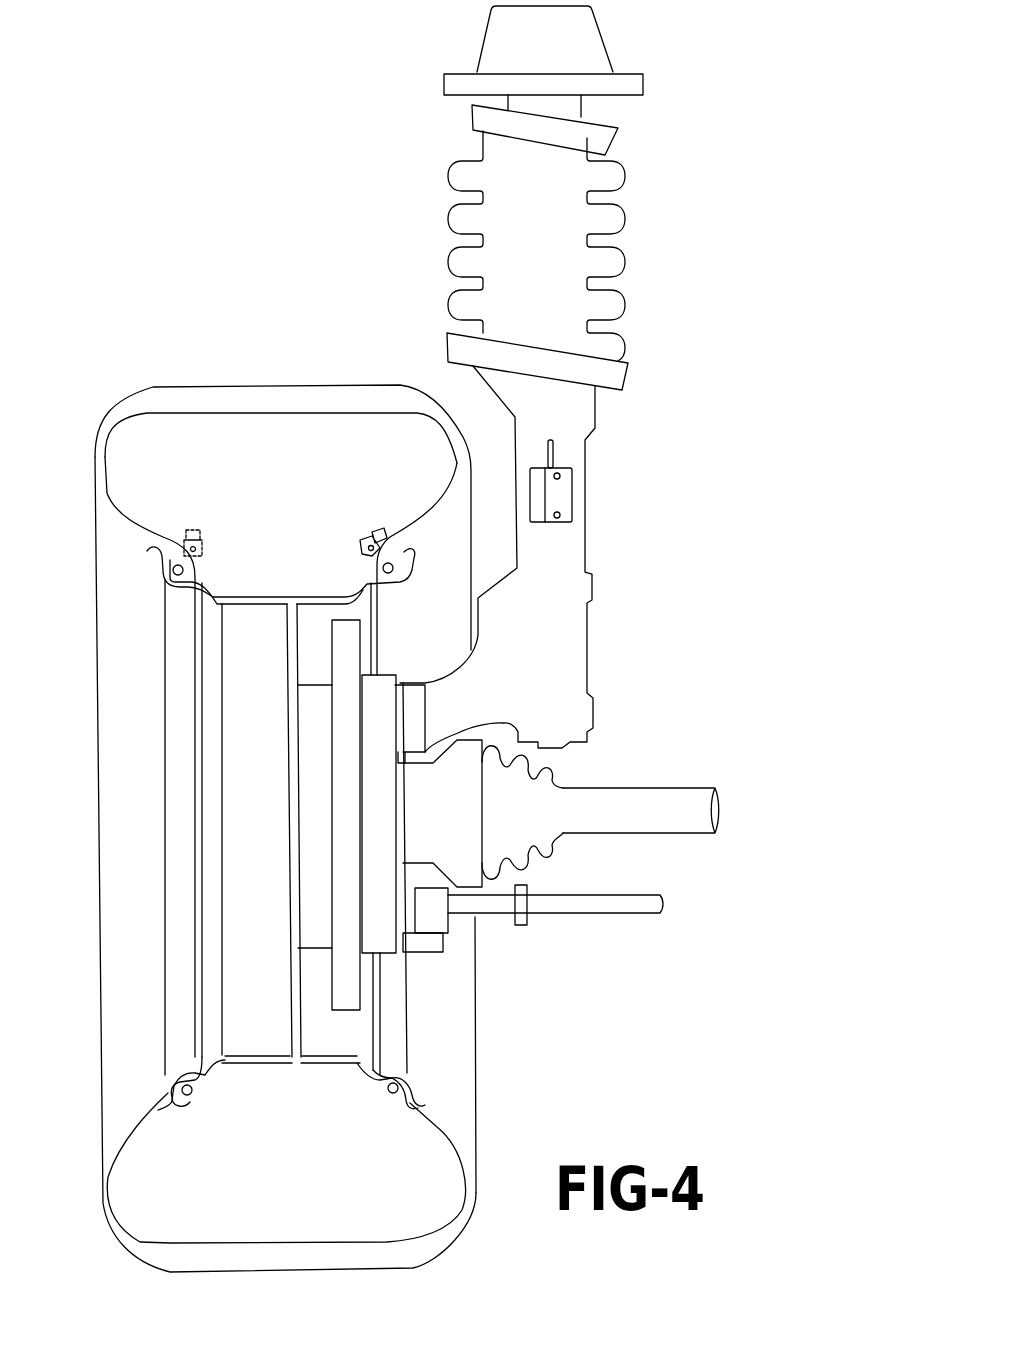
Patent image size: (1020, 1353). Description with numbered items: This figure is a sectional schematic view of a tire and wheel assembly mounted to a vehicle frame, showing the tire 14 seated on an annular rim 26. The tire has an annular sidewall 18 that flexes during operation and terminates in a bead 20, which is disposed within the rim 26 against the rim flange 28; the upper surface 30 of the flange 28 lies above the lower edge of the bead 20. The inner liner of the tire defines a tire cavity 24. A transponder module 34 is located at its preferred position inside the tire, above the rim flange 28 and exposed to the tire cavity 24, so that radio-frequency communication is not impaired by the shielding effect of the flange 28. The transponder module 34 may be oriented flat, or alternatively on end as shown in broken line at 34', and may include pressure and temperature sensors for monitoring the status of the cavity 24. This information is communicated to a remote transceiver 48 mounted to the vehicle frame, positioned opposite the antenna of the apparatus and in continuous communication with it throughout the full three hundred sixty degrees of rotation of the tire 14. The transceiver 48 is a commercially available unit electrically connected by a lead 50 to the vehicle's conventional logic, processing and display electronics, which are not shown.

The tread 14 is at (237, 1272).
The annular sidewall 18 is at (475, 1200).
The terminal bead 20 is at (393, 1092).
The tire cavity 24 is at (172, 1195).
The annular rim 26 is at (258, 1060).
The rim flange 28 is at (410, 1093).
The outer rim flange surface 30 is at (415, 1107).
The transponder module 34 is at (357, 513).
The transponder module oriented on end 34' is at (221, 502).
The remote transceiver 48 is at (565, 495).
The lead 50 is at (550, 447).